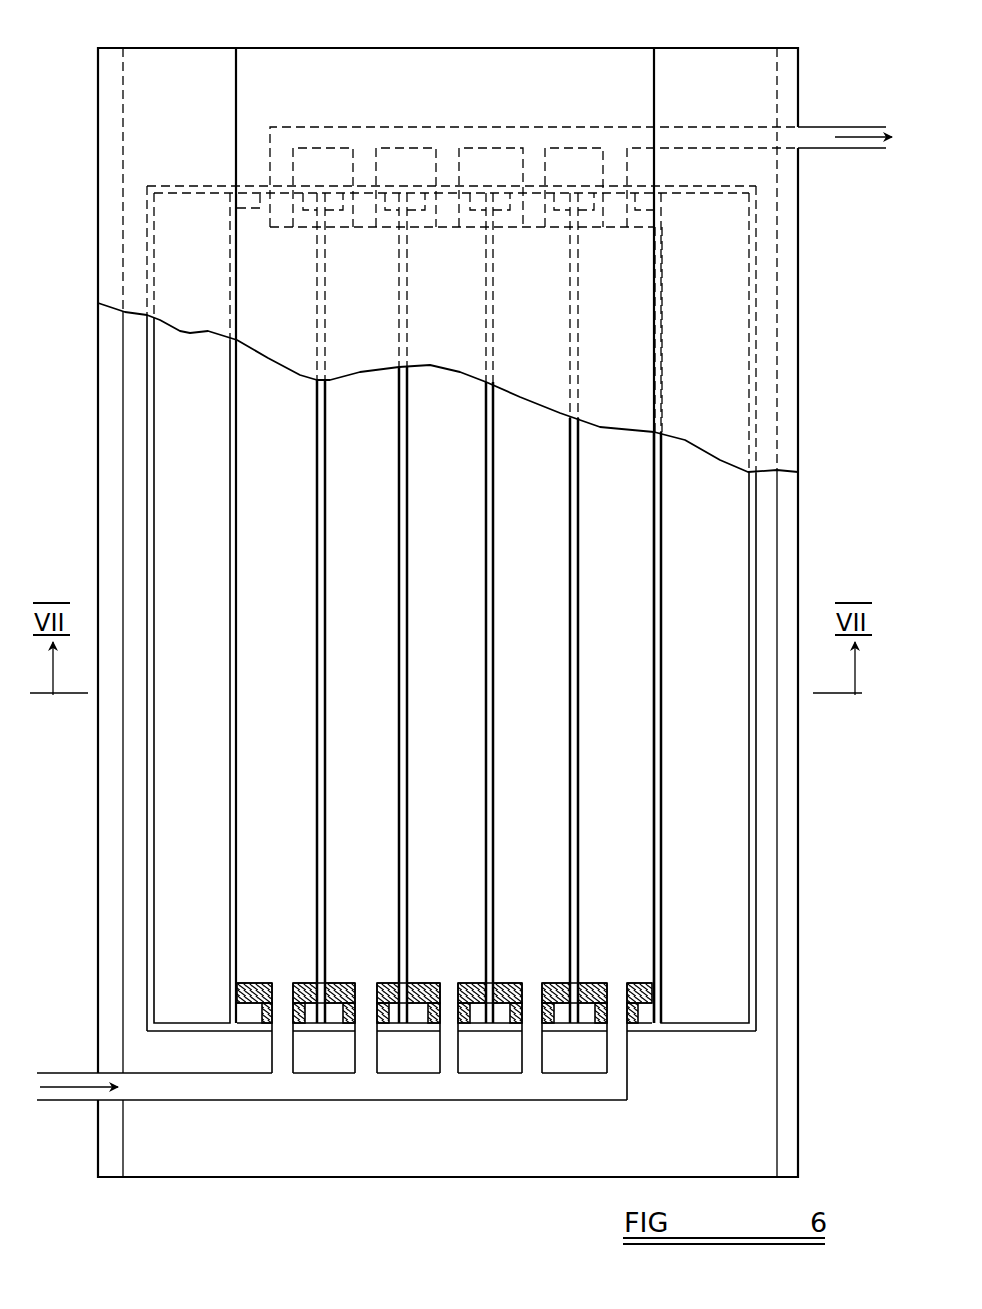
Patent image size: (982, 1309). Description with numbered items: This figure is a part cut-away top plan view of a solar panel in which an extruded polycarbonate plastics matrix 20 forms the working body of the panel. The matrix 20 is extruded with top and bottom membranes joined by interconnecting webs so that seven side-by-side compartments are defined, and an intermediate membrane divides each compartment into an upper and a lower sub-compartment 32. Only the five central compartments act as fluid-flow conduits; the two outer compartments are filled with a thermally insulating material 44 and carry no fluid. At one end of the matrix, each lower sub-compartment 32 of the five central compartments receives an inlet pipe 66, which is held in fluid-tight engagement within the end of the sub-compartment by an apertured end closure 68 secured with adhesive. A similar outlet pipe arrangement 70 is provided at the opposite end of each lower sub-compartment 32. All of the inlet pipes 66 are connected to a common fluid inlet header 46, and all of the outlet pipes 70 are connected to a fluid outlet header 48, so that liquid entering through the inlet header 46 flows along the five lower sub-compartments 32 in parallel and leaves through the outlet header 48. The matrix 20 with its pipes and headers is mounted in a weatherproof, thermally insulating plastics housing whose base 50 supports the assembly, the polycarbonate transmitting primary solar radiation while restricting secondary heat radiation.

The extruded polycarbonate plastics matrix 20 is at (191, 1038).
The lower sub-compartment 32 is at (615, 540).
The thermally insulating material 44 is at (180, 831).
The fluid inlet header 46 is at (80, 1077).
The fluid outlet header 48 is at (820, 148).
The base 50 is at (620, 77).
The inlet pipe 66 is at (372, 1050).
The apertured end closure 68 is at (562, 1037).
The outlet pipe arrangement 70 is at (280, 168).